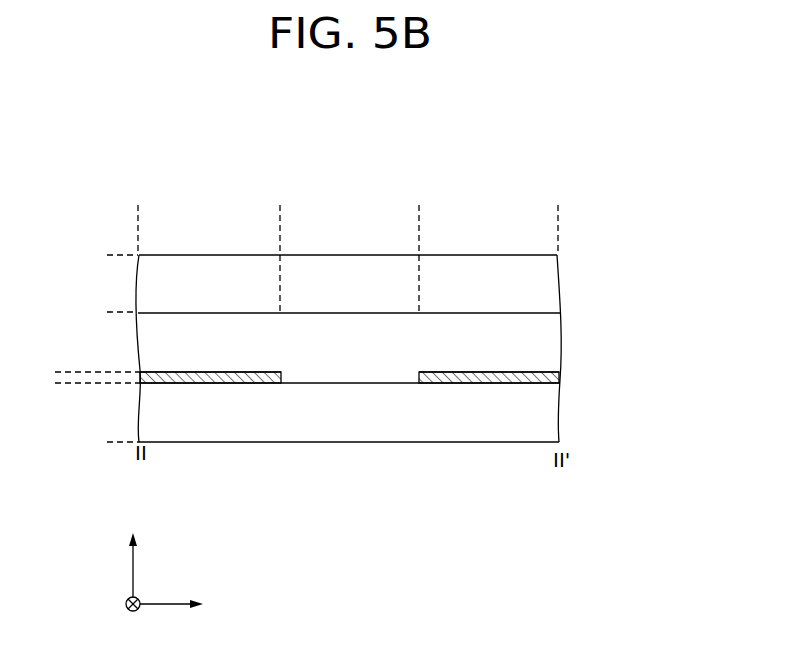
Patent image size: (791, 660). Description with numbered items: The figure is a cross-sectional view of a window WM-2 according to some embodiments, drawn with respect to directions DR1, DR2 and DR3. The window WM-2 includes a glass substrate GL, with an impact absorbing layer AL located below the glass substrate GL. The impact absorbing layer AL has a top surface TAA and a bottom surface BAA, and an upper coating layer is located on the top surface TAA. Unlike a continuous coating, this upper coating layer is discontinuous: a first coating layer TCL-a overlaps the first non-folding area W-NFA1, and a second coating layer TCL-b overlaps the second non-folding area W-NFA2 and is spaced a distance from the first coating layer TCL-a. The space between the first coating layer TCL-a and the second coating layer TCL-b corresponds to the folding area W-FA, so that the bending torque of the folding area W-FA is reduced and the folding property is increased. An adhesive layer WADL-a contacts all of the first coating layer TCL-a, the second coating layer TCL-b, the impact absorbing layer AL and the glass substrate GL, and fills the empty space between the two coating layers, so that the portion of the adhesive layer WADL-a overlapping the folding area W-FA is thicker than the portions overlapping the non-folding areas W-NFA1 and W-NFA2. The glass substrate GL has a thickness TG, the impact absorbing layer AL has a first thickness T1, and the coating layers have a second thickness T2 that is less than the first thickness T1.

The window WM-2 is at (609, 192).
The glass substrate GL is at (548, 281).
The adhesive layer WADL-a is at (553, 322).
The first coating layer TCL-a is at (213, 383).
The second coating layer TCL-b is at (556, 378).
The top surface TAA is at (505, 379).
The impact absorbing layer AL is at (548, 412).
The bottom surface BAA is at (515, 446).
The first non-folding area W-NFA1 is at (278, 214).
The folding area W-FA is at (417, 214).
The second non-folding area W-NFA2 is at (556, 214).
The thickness of glass substrate TG is at (113, 257).
The second thickness T2 is at (67, 350).
The first thickness T1 is at (113, 385).
The first direction DR1 is at (133, 618).
The second direction DR2 is at (192, 605).
The third direction DR3 is at (133, 554).